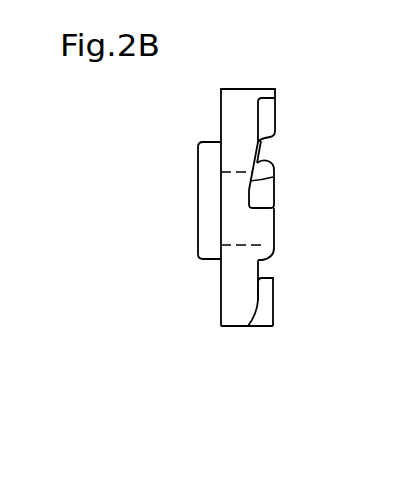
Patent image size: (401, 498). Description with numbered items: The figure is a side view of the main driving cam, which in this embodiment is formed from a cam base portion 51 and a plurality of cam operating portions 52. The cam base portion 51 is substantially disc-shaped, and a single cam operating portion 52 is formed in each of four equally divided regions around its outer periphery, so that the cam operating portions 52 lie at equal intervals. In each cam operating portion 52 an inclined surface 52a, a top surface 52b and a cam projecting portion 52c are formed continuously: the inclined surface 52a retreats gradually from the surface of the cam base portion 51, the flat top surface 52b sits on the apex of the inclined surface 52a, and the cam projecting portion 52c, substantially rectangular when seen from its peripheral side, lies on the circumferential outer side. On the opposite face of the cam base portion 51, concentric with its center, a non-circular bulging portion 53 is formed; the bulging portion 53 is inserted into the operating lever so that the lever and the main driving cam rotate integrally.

The cam base portion 51 is at (249, 193).
The cam operating portion 52 is at (275, 108).
The inclined surface 52a is at (265, 314).
The top surface 52b is at (258, 260).
The cam projecting portion 52c is at (274, 230).
The bulging portion 53 is at (198, 212).